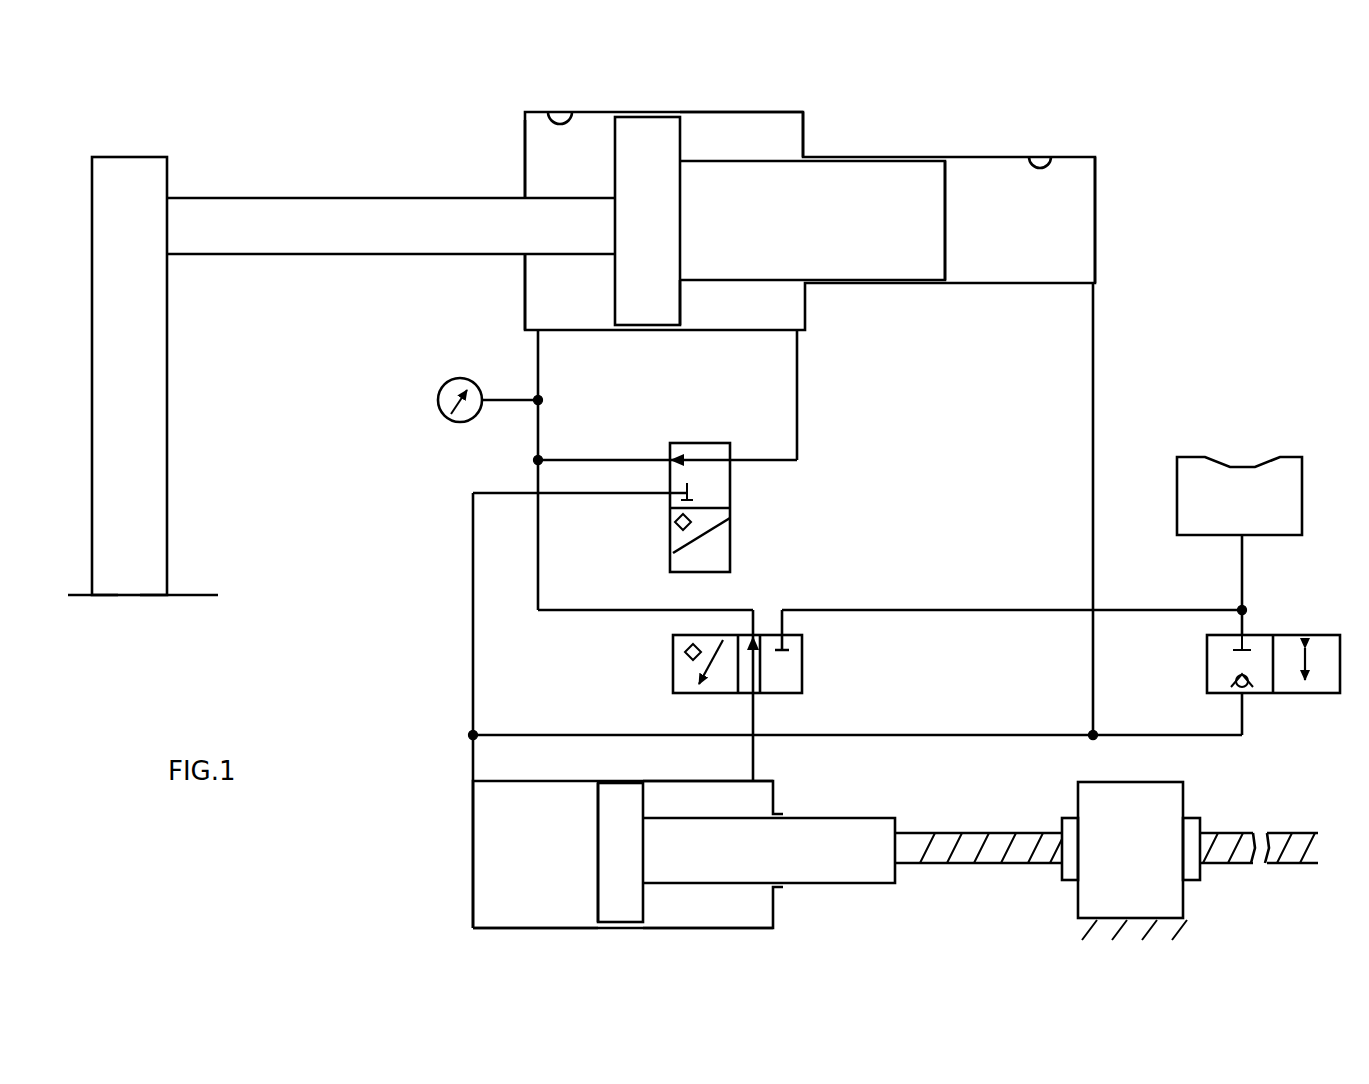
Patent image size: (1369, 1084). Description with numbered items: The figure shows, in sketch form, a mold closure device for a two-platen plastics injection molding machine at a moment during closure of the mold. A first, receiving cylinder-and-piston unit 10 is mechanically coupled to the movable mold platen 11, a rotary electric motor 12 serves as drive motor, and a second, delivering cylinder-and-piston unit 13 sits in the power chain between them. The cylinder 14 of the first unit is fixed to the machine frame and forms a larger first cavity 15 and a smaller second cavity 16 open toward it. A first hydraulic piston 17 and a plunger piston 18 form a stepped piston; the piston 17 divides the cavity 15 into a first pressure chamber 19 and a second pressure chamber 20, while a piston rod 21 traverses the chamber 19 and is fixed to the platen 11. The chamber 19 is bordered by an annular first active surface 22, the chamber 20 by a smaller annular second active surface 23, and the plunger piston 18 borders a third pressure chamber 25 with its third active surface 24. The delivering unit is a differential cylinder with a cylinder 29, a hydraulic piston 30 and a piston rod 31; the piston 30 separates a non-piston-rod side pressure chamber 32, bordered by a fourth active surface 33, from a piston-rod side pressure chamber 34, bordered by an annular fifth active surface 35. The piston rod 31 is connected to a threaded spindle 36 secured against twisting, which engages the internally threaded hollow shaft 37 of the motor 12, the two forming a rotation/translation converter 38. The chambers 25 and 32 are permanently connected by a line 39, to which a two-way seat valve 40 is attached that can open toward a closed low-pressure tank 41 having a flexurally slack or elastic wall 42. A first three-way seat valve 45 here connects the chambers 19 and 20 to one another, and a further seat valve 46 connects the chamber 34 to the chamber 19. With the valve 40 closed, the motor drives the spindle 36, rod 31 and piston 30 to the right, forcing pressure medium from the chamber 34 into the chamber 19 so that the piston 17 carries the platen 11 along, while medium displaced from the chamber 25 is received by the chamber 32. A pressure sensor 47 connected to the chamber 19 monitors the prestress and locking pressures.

The first receiving cylinder-and-piston unit 10 is at (850, 125).
The movable mold platen 11 is at (152, 370).
The rotary electric motor 12 is at (1170, 905).
The second delivering cylinder-and-piston unit 13 is at (452, 812).
The cylinder 14 is at (790, 107).
The first cavity 15 is at (548, 115).
The second cavity 16 is at (1045, 140).
The first hydraulic piston 17 is at (650, 138).
The plunger piston 18 is at (917, 185).
The first pressure chamber 19 is at (540, 170).
The second pressure chamber 20 is at (733, 136).
The piston rod 21 is at (317, 225).
The first active surface 22 is at (615, 300).
The second active surface 23 is at (680, 305).
The third active surface 24 is at (945, 237).
The third pressure chamber 25 is at (1085, 202).
The cylinder 29 is at (470, 905).
The hydraulic piston 30 is at (620, 800).
The piston rod 31 is at (855, 843).
The non-piston-rod side pressure chamber 32 is at (468, 853).
The fourth active surface 33 is at (598, 866).
The piston-rod side pressure chamber 34 is at (717, 800).
The fifth active surface 35 is at (643, 906).
The threaded spindle 36 is at (977, 840).
The hollow shaft 37 is at (1200, 822).
The rotation/translation converter 38 is at (1048, 882).
The line 39 is at (961, 733).
The 2/2-way seat valve 40 is at (1290, 632).
The low-pressure tank 41 is at (1177, 522).
The flexurally slack or elastic wall 42 is at (1260, 460).
The first 3/2-way seat valve 45 is at (730, 500).
The further 3/2-way seat valve 46 is at (802, 670).
The pressure sensor 47 is at (440, 385).